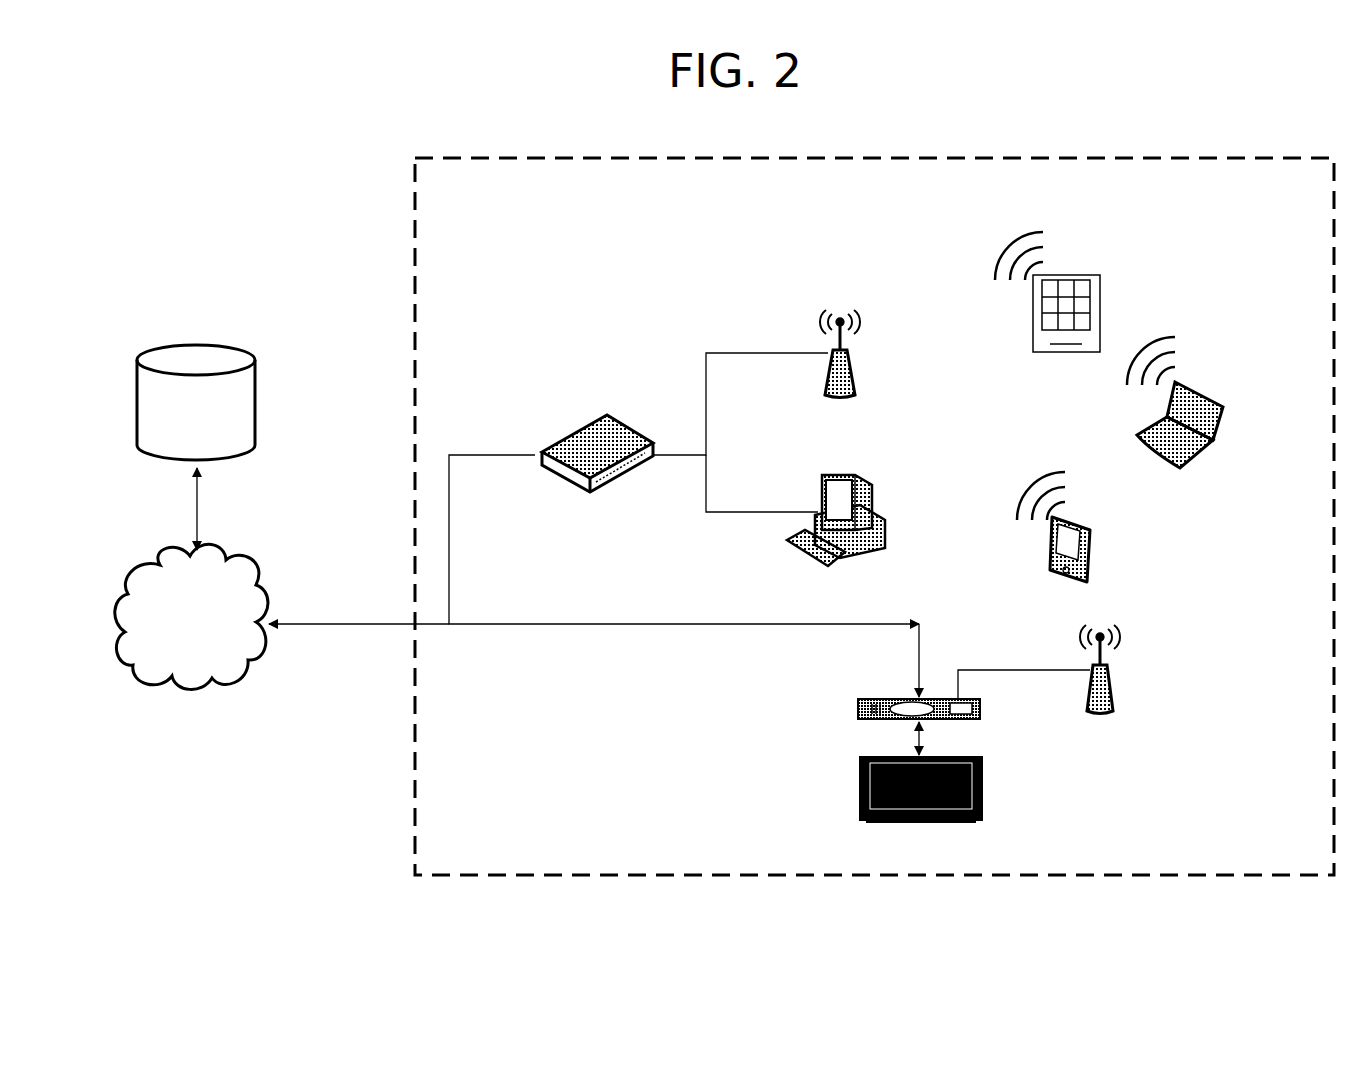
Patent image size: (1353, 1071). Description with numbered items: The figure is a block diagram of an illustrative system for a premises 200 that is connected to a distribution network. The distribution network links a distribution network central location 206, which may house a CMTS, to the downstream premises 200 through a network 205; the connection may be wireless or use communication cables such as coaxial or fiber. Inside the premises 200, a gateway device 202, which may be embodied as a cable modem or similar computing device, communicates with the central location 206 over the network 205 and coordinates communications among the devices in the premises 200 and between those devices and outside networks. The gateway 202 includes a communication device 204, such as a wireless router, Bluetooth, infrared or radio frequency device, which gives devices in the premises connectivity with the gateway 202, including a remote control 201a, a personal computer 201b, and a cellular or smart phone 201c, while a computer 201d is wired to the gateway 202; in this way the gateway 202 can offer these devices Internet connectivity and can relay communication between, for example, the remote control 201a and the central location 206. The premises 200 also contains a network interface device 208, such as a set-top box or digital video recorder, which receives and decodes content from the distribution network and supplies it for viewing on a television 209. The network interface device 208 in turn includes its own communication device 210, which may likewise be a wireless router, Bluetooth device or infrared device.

The premises 200 is at (910, 158).
The remote control 201a is at (1105, 272).
The personal computer 201b is at (1183, 378).
The cellular and/or smart phone 201c is at (1093, 527).
The computer 201d is at (875, 552).
The gateway device 202 is at (568, 497).
The communication device 204 is at (858, 365).
The network 205 is at (191, 616).
The distribution network central location 206 is at (197, 343).
The network interface device 208 is at (980, 717).
The television 209 is at (982, 787).
The communication device 210 is at (1110, 663).